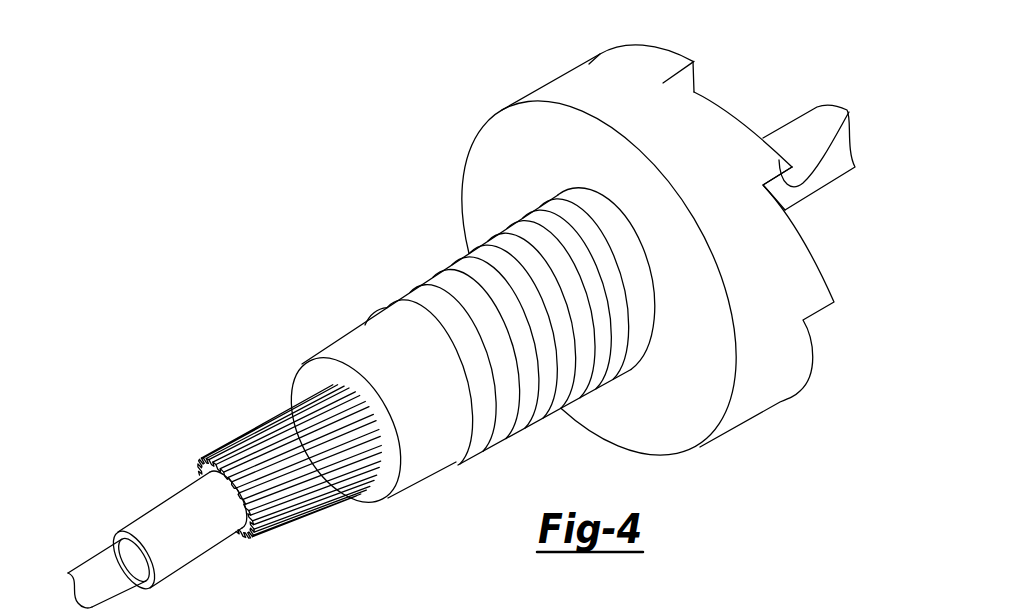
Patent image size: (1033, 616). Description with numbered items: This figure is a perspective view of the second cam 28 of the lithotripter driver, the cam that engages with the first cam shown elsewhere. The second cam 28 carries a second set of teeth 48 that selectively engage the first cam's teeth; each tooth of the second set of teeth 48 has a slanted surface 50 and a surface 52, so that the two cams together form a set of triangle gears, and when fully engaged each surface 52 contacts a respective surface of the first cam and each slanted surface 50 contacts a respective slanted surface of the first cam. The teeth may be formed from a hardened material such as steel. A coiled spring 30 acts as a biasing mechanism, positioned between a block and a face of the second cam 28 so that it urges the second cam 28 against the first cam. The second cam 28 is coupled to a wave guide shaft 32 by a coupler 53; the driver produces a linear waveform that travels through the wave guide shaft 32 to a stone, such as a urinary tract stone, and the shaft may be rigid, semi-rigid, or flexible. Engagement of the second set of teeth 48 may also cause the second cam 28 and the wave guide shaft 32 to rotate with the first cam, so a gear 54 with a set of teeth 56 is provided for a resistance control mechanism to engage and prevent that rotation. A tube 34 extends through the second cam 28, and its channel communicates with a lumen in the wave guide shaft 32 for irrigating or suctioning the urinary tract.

The second cam 28 is at (568, 93).
The coiled spring 30 is at (432, 282).
The wave guide shaft 32 is at (102, 560).
The tube 34 is at (836, 175).
The second set of teeth 48 is at (774, 148).
The slanted surface 50 is at (732, 118).
The surface 52 is at (848, 112).
The coupler 53 is at (352, 350).
The gear 54 is at (307, 497).
The set of teeth 56 is at (229, 440).